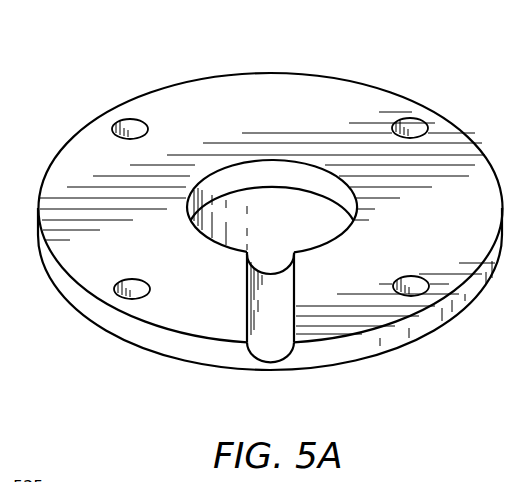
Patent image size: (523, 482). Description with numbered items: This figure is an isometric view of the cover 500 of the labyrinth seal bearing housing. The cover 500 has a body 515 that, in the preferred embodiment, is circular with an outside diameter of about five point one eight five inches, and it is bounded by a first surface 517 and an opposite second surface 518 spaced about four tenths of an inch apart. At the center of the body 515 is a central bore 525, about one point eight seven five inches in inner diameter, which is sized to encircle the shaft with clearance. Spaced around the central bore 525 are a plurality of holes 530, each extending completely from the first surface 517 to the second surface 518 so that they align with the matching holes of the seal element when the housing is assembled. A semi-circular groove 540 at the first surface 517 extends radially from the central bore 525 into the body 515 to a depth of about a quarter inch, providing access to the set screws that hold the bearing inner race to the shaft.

The cover 500 is at (155, 43).
The body 515 is at (82, 294).
The first surface 517 is at (52, 190).
The second surface 518 is at (128, 344).
The central bore 525 is at (277, 178).
The holes 530 is at (128, 122).
The groove 540 is at (272, 333).